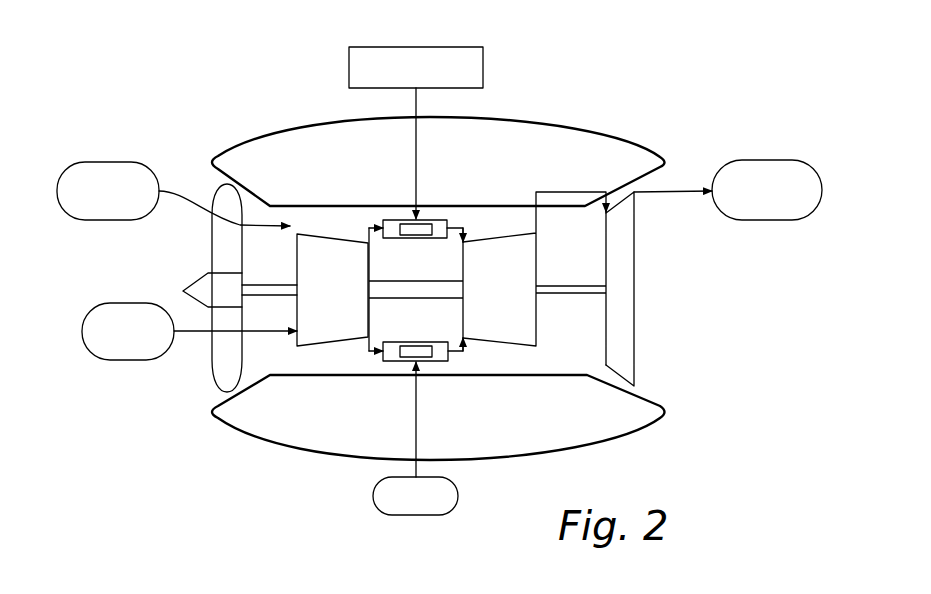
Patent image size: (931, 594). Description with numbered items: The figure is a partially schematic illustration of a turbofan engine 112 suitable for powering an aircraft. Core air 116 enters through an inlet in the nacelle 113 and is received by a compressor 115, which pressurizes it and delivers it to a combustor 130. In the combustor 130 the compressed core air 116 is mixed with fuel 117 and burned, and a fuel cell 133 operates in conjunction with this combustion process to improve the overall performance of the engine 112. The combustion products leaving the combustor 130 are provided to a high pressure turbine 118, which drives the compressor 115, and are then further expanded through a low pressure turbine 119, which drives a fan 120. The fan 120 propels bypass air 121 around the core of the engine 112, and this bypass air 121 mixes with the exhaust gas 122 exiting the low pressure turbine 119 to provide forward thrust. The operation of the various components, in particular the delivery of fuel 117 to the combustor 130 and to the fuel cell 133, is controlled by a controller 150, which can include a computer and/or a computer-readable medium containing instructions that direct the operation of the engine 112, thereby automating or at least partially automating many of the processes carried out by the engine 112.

The turbofan engine 112 is at (305, 115).
The nacelle 113 is at (210, 417).
The compressor 115 is at (327, 236).
The core air 116 is at (122, 303).
The fuel 117 is at (428, 517).
The high pressure turbine 118 is at (508, 238).
The low pressure turbine 119 is at (618, 374).
The fan 120 is at (215, 367).
The bypass air 121 is at (92, 162).
The exhaust gas 122 is at (765, 160).
The combustor 130 is at (392, 362).
The fuel cell 133 is at (434, 350).
The controller 150 is at (452, 46).